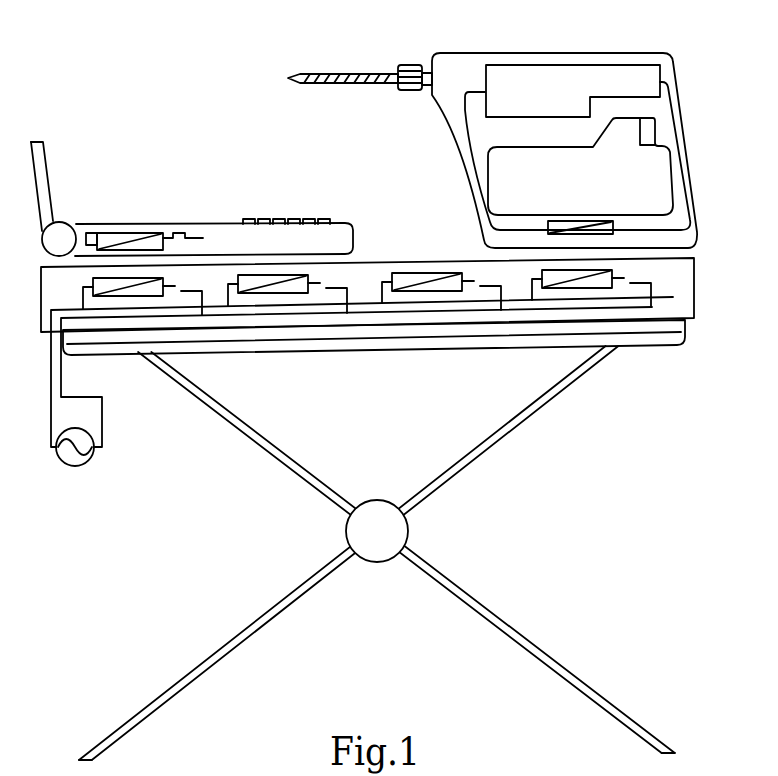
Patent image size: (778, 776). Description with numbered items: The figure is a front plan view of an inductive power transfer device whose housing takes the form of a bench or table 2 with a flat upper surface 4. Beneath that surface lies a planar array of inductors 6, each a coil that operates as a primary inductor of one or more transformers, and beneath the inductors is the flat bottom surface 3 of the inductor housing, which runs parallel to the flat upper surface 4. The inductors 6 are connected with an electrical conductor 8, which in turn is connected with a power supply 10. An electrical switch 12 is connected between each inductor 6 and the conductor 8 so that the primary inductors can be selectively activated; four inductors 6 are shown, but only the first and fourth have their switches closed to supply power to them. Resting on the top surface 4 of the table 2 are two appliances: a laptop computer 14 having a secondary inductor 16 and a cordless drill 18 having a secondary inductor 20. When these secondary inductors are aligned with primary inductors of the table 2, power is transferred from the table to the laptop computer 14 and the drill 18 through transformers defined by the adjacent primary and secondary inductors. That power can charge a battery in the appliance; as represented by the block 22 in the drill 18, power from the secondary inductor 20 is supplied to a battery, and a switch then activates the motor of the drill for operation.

The table 2 is at (694, 300).
The flat bottom surface 3 is at (660, 322).
The flat upper surface 4 is at (685, 250).
The inductors 6 is at (92, 282).
The electrical conductor 8 is at (48, 367).
The power supply 10 is at (89, 460).
The electrical switch 12 is at (177, 289).
The laptop computer 14 is at (51, 188).
The secondary inductor 16 is at (128, 242).
The cordless drill 18 is at (668, 148).
The secondary inductor 20 is at (580, 230).
The block 22 is at (547, 54).